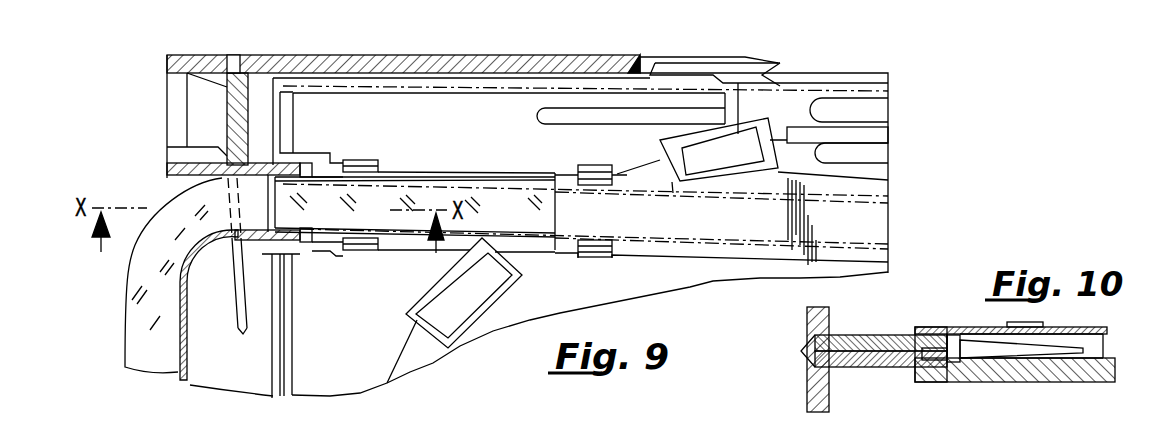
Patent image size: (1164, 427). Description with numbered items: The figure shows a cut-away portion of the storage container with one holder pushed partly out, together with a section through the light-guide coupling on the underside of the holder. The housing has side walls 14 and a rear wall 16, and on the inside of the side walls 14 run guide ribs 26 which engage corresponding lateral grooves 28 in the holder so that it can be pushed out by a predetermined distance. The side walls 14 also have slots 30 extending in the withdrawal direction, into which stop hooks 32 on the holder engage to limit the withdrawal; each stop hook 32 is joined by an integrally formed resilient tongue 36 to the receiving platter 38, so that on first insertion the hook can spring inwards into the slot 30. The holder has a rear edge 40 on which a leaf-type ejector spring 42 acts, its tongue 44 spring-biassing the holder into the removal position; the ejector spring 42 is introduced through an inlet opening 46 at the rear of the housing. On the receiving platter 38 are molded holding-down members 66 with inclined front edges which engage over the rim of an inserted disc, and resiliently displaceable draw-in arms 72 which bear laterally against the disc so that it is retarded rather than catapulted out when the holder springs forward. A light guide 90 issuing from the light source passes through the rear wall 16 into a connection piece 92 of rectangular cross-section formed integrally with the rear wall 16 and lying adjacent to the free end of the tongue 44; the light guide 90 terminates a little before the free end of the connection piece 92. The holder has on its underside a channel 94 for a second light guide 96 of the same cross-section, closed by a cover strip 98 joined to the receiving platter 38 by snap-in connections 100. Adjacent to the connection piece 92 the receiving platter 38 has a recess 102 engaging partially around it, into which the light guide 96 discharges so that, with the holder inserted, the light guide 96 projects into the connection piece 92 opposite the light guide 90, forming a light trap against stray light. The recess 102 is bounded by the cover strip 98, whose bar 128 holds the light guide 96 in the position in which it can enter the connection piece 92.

In FIG. 9, the side wall 14 is at (435, 62).
In FIG. 9, the rear wall 16 is at (180, 362).
In FIG. 10, the rear wall 16 is at (812, 372).
In FIG. 9, the guide rib 26 is at (727, 84).
In FIG. 9, the lateral groove 28 is at (362, 88).
In FIG. 9, the slot 30 is at (647, 70).
In FIG. 9, the stop hook 32 is at (676, 70).
In FIG. 9, the resilient tongue 36 is at (557, 103).
In FIG. 9, the receiving platter 38 is at (344, 342).
In FIG. 10, the receiving platter 38 is at (1057, 367).
In FIG. 9, the rear edge 40 is at (270, 336).
In FIG. 9, the ejector spring 42 is at (219, 92).
In FIG. 9, the tongue 44 is at (234, 283).
In FIG. 9, the inlet opening 46 is at (175, 118).
In FIG. 9, the holding-down member 66 is at (440, 325).
In FIG. 9, the draw-in arm 72 is at (885, 134).
In FIG. 9, the light guide 90 is at (153, 356).
In FIG. 10, the light guide 90 is at (808, 349).
In FIG. 9, the connection piece 92 is at (298, 242).
In FIG. 10, the connection piece 92 is at (930, 372).
In FIG. 9, the channel 94 is at (533, 228).
In FIG. 10, the channel 94 is at (1102, 352).
In FIG. 9, the light guide 96 is at (498, 190).
In FIG. 10, the light guide 96 is at (1012, 357).
In FIG. 9, the cover strip 98 is at (650, 248).
In FIG. 10, the cover strip 98 is at (1107, 338).
In FIG. 9, the snap-in connection 100 is at (356, 160).
In FIG. 10, the snap-in connection 100 is at (1020, 322).
In FIG. 9, the recess 102 is at (316, 252).
In FIG. 10, the recess 102 is at (933, 328).
In FIG. 10, the bar 128 is at (967, 358).